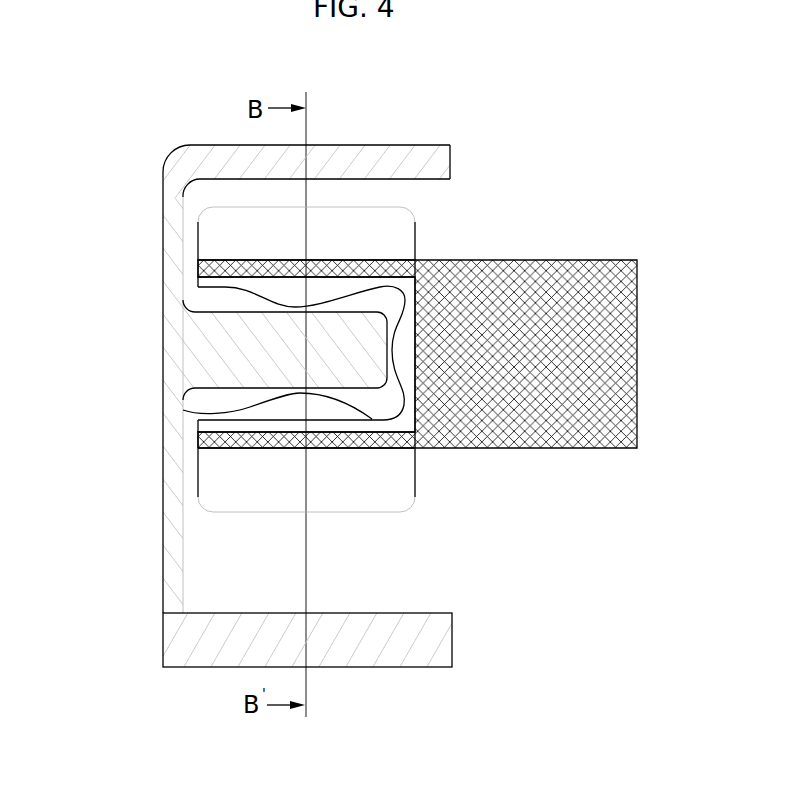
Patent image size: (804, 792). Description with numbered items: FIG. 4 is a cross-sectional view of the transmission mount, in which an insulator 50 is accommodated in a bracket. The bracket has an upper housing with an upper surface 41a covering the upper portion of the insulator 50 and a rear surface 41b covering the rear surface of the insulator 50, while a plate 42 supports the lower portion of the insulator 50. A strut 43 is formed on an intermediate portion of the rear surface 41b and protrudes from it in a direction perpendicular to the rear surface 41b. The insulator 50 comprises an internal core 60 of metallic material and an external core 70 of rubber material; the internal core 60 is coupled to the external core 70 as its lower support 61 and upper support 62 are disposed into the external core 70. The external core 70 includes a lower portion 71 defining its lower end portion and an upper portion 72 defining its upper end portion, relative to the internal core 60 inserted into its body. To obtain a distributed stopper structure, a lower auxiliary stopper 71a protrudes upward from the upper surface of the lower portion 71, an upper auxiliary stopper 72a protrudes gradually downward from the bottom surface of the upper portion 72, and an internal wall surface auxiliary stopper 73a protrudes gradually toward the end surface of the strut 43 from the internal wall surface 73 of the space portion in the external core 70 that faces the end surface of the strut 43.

The upper surface 41a is at (398, 163).
The rear surface 41b is at (162, 363).
The plate 42 is at (383, 647).
The strut 43 is at (357, 350).
The insulator 50 is at (425, 220).
The internal core 60 is at (585, 357).
The lower support 61 is at (348, 440).
The upper support 62 is at (340, 266).
The external core 70 is at (328, 313).
The lower portion 71 is at (268, 485).
The lower auxiliary stopper 71a is at (267, 415).
The upper portion 72 is at (220, 232).
The upper auxiliary stopper 72a is at (272, 289).
The internal wall surface 73 is at (403, 337).
The internal wall surface auxiliary stopper 73a is at (393, 373).